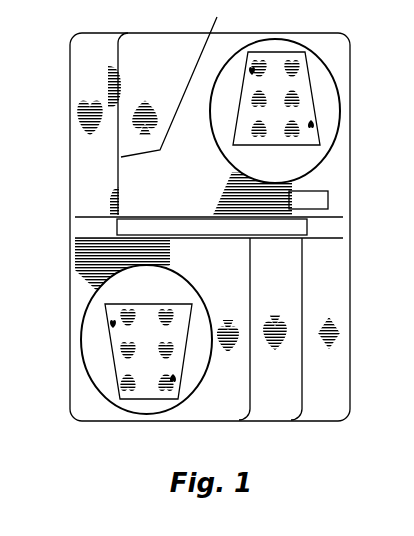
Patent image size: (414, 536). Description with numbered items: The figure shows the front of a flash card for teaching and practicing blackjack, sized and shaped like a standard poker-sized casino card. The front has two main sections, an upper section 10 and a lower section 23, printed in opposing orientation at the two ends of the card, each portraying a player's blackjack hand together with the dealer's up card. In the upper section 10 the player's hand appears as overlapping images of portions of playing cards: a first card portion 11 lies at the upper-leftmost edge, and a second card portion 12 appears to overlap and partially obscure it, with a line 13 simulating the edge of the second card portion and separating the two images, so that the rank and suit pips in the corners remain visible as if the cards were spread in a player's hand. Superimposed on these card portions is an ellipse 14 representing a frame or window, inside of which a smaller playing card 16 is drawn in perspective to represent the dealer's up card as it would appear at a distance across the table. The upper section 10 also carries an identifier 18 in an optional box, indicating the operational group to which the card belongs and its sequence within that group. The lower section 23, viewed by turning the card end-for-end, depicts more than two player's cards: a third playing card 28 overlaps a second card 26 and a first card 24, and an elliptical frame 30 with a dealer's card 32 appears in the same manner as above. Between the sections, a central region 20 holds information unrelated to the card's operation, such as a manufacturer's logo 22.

The upper section 10 is at (92, 107).
The first card portion 11 is at (89, 44).
The second card portion 12 is at (157, 48).
The line 13 is at (175, 78).
The ellipse 14 is at (334, 65).
The smaller playing card 16 is at (322, 122).
The identifier 18 is at (330, 188).
The central region 20 is at (337, 222).
The manufacturer's logo 22 is at (307, 228).
The lower section 23 is at (299, 348).
The first card 24 is at (330, 388).
The second card 26 is at (285, 402).
The third playing card 28 is at (215, 387).
The elliptical frame 30 is at (90, 380).
The dealer's card 32 is at (100, 329).